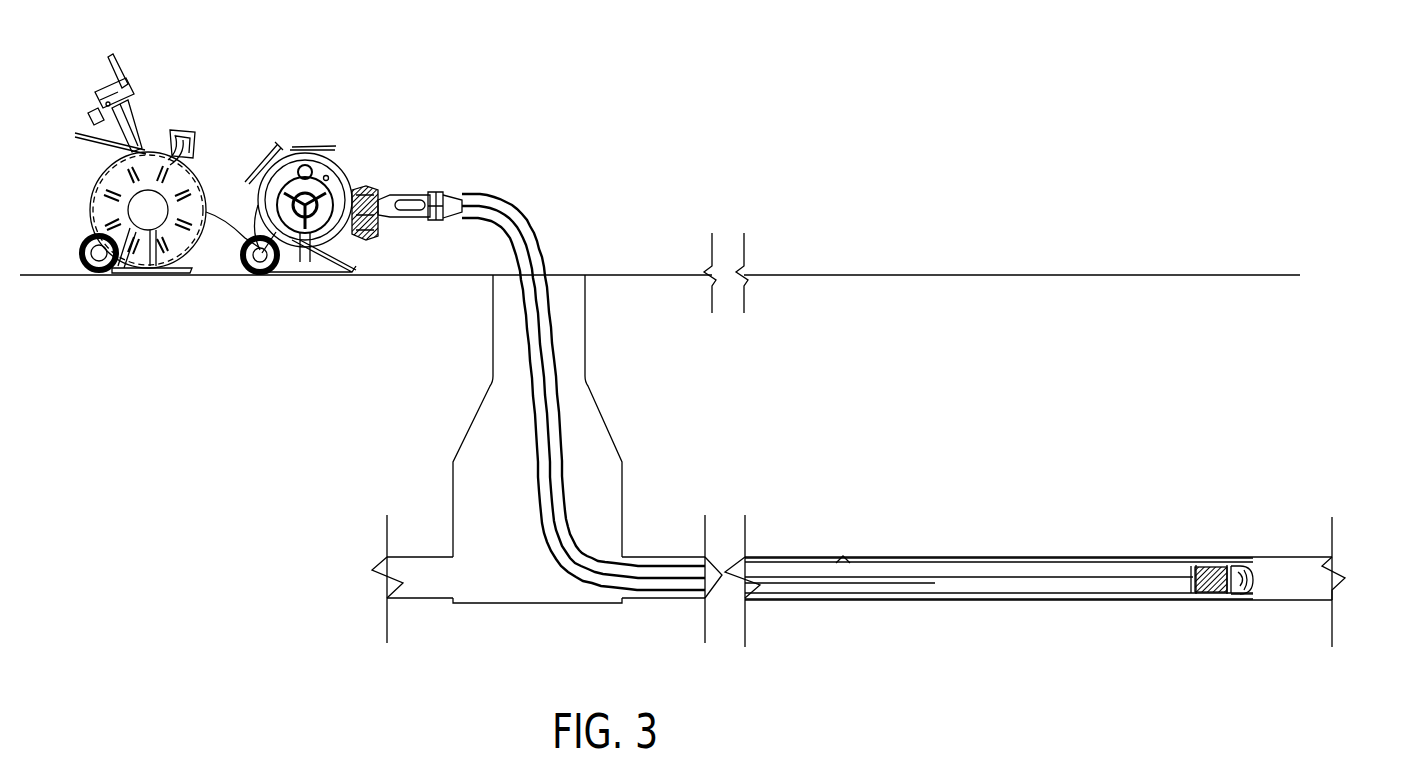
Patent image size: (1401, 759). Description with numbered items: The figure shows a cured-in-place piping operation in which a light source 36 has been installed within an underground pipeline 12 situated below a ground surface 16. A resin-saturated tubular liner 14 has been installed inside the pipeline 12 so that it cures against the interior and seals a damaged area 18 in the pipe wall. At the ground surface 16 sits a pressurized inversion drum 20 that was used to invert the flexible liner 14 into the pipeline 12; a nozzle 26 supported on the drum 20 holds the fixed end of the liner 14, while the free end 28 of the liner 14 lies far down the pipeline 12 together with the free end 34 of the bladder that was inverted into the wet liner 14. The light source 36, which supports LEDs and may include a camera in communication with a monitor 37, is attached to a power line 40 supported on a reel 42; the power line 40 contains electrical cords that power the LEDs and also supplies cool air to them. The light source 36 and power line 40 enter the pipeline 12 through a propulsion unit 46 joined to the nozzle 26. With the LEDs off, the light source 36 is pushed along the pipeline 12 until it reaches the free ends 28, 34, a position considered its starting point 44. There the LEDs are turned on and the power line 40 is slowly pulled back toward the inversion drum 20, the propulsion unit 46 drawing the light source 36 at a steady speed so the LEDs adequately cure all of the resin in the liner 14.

The pipeline 12 is at (1020, 598).
The liner 14 is at (1128, 597).
The ground surface 16 is at (828, 275).
The damaged area 18 is at (843, 558).
The pressurized inversion drum 20 is at (342, 170).
The nozzle 26 is at (447, 193).
The free end 28 is at (1250, 595).
The free end 34 is at (1253, 580).
The light source 36 is at (1213, 592).
The monitor 37 is at (118, 73).
The power line 40 is at (930, 577).
The reel 42 is at (192, 167).
The starting point 44 is at (1245, 578).
The propulsion unit 46 is at (368, 200).